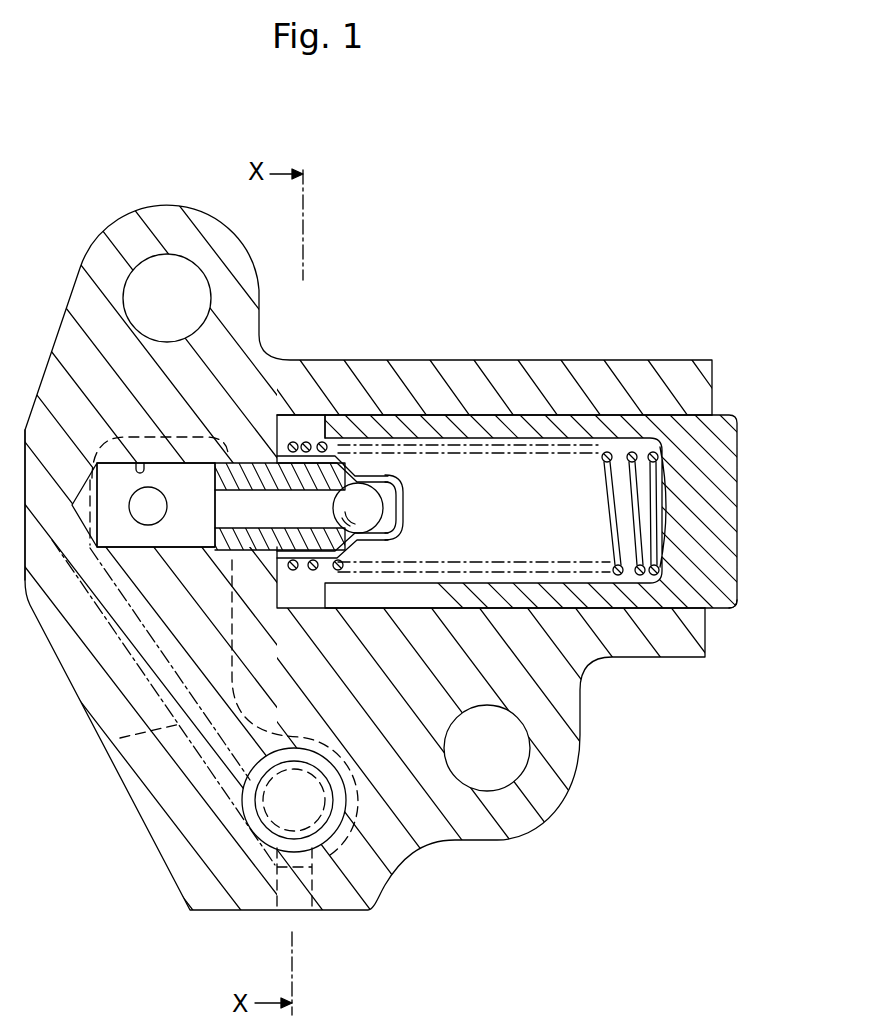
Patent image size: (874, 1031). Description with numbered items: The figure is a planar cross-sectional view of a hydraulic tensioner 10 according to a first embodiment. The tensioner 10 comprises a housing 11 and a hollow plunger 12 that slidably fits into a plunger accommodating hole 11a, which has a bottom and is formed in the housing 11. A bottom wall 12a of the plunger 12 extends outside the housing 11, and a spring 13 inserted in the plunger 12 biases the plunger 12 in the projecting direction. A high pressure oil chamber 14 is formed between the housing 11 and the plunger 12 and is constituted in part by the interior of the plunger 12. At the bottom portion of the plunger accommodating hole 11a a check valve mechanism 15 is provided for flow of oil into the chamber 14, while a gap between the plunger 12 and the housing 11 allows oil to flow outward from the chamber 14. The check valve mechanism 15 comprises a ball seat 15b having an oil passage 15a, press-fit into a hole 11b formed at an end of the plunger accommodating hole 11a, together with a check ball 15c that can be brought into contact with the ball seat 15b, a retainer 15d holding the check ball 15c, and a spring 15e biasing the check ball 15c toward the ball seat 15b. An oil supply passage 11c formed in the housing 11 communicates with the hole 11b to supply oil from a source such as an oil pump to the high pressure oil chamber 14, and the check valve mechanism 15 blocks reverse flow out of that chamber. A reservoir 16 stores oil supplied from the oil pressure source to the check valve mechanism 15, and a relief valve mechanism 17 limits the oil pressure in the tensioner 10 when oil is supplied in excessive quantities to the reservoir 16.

The tensioner 10 is at (525, 308).
The housing 11 is at (443, 372).
The plunger accommodating hole 11a is at (305, 412).
The hole 11b is at (140, 468).
The oil supply passage 11c is at (141, 522).
The hollow plunger 12 is at (720, 504).
The bottom wall 12a is at (738, 568).
The spring 13 is at (640, 545).
The high pressure oil chamber 14 is at (572, 540).
The check valve mechanism 15 is at (420, 520).
The oil passage 15a is at (215, 522).
The ball seat 15b is at (262, 552).
The check ball 15c is at (360, 527).
The retainer 15d is at (403, 548).
The spring 15e is at (428, 463).
The reservoir 16 is at (120, 738).
The relief valve mechanism 17 is at (283, 800).